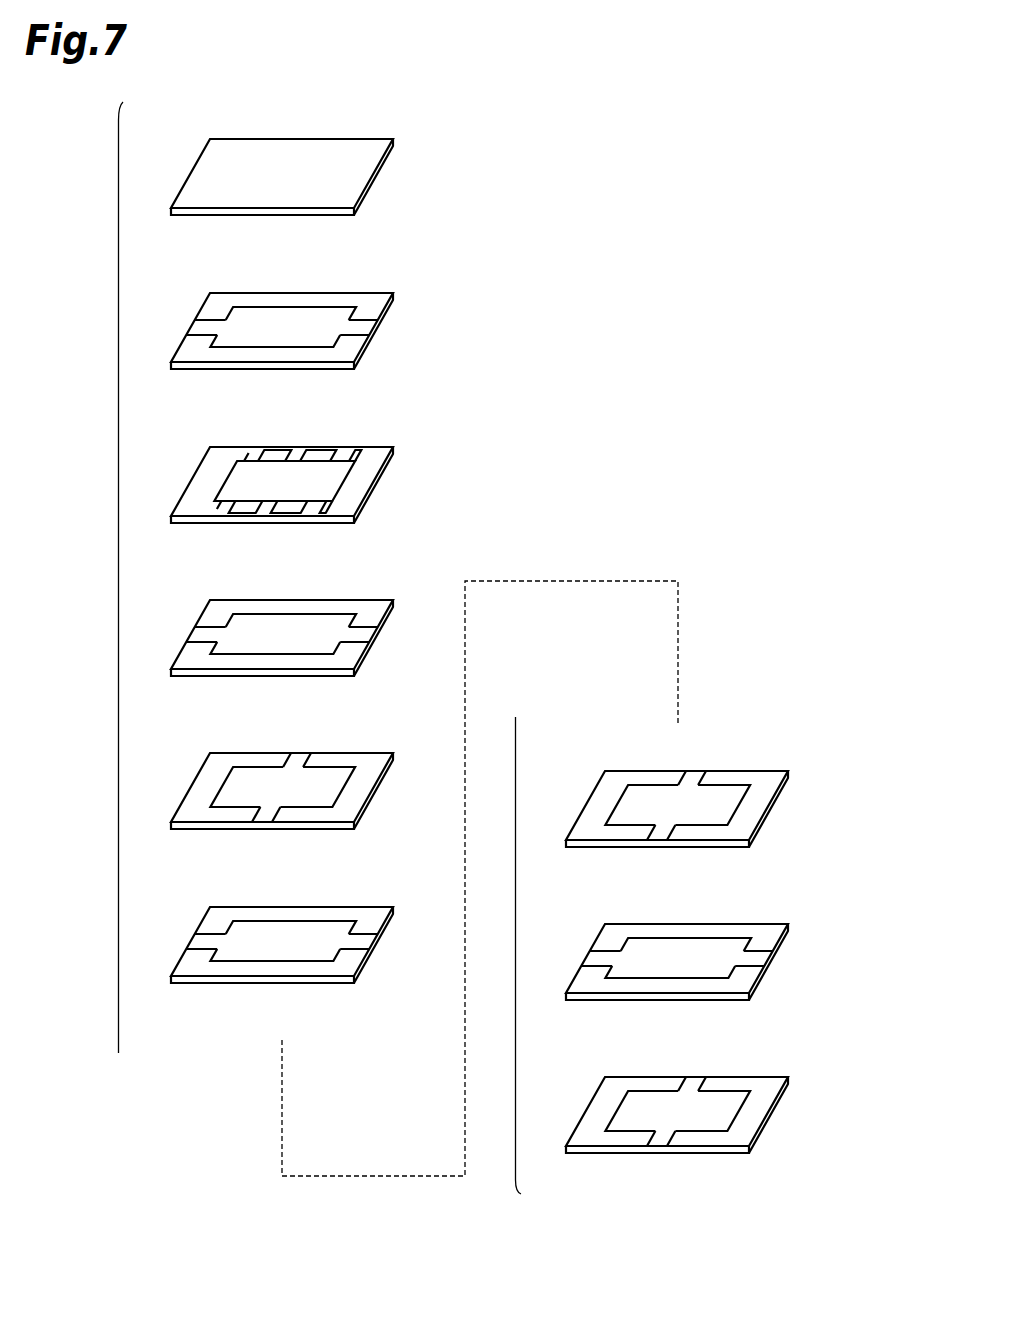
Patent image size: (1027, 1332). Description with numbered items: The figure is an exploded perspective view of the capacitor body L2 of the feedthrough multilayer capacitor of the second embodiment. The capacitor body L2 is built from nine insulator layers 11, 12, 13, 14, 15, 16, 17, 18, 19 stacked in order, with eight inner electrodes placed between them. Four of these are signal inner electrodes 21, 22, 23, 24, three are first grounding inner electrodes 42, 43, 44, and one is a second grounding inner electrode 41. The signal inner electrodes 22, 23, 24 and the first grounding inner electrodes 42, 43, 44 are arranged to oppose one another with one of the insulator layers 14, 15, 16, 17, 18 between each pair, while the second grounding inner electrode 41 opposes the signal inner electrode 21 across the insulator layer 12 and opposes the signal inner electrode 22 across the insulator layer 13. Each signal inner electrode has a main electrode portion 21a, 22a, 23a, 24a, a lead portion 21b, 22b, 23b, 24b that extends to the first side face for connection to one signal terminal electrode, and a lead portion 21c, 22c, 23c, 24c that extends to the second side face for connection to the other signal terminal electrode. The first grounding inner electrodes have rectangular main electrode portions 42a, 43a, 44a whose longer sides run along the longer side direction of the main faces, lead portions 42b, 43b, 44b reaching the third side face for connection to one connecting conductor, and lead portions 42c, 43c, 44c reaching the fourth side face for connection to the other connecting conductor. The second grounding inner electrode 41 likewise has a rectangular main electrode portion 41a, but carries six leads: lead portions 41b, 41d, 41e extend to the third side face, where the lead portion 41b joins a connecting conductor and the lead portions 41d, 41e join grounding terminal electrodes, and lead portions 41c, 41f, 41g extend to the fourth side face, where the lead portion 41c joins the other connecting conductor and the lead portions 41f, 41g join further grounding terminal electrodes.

The insulator layer 11 is at (294, 155).
The insulator layer 12 is at (294, 309).
The insulator layer 13 is at (294, 464).
The insulator layer 14 is at (294, 616).
The insulator layer 15 is at (294, 769).
The insulator layer 16 is at (294, 923).
The insulator layer 17 is at (689, 787).
The insulator layer 18 is at (689, 940).
The insulator layer 19 is at (689, 1093).
The signal inner electrode 21 is at (285, 334).
The main electrode portion 21a is at (320, 338).
The lead portion 21b is at (178, 317).
The lead portion 21c is at (390, 318).
The signal inner electrode 22 is at (285, 641).
The main electrode portion 22a is at (320, 645).
The lead portion 22b is at (178, 624).
The lead portion 22c is at (390, 625).
The signal inner electrode 23 is at (285, 948).
The main electrode portion 23a is at (320, 952).
The lead portion 23b is at (178, 931).
The lead portion 23c is at (390, 932).
The signal inner electrode 24 is at (679, 965).
The main electrode portion 24a is at (715, 969).
The lead portion 24b is at (572, 948).
The lead portion 24c is at (785, 949).
The second grounding inner electrode 41 is at (281, 488).
The main electrode portion 41a is at (321, 481).
The lead portion 41b is at (271, 532).
The lead portion 41c is at (314, 437).
The lead portion 41d is at (225, 532).
The lead portion 41e is at (307, 532).
The lead portion 41f is at (267, 437).
The lead portion 41g is at (357, 437).
The first grounding inner electrode 42 is at (281, 794).
The main electrode portion 42a is at (319, 787).
The lead portion 42b is at (258, 837).
The lead portion 42c is at (304, 743).
The first grounding inner electrode 43 is at (676, 812).
The main electrode portion 43a is at (714, 805).
The lead portion 43b is at (653, 856).
The lead portion 43c is at (698, 761).
The first grounding inner electrode 44 is at (676, 1118).
The main electrode portion 44a is at (714, 1111).
The lead portion 44b is at (653, 1162).
The lead portion 44c is at (698, 1067).
The capacitor body L2 is at (119, 603).